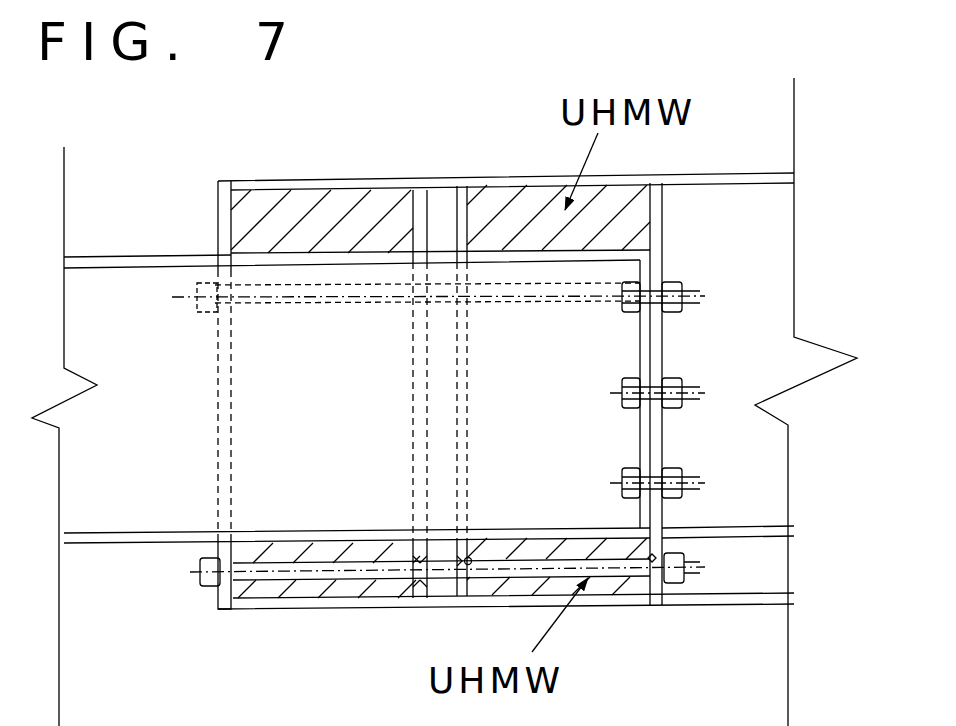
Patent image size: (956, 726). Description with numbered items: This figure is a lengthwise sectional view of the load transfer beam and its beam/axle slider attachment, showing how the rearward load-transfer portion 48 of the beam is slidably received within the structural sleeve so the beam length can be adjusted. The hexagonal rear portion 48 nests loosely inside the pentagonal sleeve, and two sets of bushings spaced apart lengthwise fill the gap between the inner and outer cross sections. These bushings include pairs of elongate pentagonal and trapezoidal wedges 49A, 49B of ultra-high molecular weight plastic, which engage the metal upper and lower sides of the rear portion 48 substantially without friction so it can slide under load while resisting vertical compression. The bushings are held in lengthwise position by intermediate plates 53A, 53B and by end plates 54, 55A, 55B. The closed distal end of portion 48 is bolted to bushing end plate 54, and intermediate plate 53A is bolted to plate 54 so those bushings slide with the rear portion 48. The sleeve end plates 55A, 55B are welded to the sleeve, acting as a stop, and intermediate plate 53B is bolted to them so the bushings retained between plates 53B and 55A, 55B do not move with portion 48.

The rearward load-transfer portion 48 is at (138, 553).
The pentagonal wedge bushing 49A is at (303, 213).
The trapezoidal wedge bushing 49B is at (547, 577).
The intermediate plate 53A is at (470, 546).
The intermediate plate 53B is at (413, 557).
The bushing end plate 54 is at (450, 207).
The sleeve end plate 55A is at (667, 350).
The sleeve end plate 55B is at (217, 222).